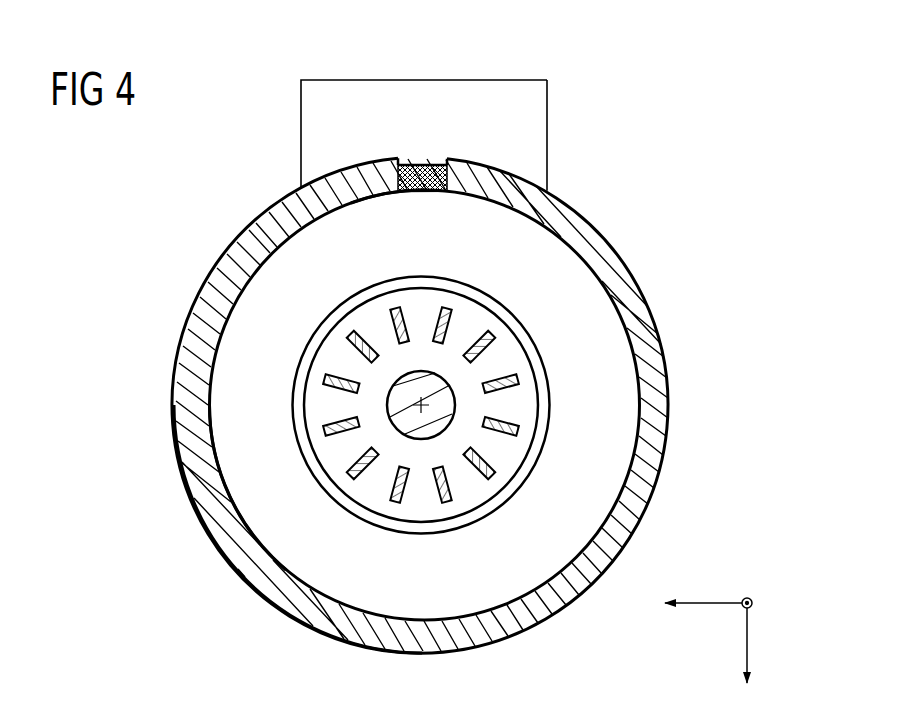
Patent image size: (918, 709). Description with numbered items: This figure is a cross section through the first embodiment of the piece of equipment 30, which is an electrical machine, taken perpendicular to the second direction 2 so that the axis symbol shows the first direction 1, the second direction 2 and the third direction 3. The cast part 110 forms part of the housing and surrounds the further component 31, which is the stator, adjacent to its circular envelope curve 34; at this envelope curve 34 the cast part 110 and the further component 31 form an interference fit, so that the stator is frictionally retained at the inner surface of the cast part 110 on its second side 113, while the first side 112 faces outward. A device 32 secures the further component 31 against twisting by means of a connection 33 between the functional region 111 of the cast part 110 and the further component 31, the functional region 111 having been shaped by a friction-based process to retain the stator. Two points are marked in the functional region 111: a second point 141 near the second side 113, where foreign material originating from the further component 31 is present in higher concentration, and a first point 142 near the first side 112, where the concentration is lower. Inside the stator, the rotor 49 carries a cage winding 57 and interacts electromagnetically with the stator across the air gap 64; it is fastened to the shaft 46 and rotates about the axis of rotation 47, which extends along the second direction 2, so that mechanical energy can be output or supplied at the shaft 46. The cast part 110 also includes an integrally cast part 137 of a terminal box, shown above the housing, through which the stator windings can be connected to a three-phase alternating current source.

The first direction 1 is at (750, 640).
The second direction 2 is at (754, 597).
The third direction 3 is at (711, 600).
The piece of equipment 30 is at (605, 132).
The further component 31 is at (295, 550).
The device for securing against twisting 32 is at (358, 110).
The connection 33 is at (428, 194).
The envelope curve 34 is at (230, 494).
The shaft 46 is at (438, 407).
The axis of rotation 47 is at (425, 407).
The rotor 49 is at (503, 358).
The cage winding 57 is at (450, 322).
The air gap 64 is at (453, 525).
The cast part 110 is at (215, 280).
The functional region 111 is at (433, 147).
The first side 112 is at (258, 218).
The second side 113 is at (240, 318).
The integrally cast part of a terminal box 137 is at (522, 92).
The second point 141 is at (387, 190).
The first point 142 is at (410, 165).